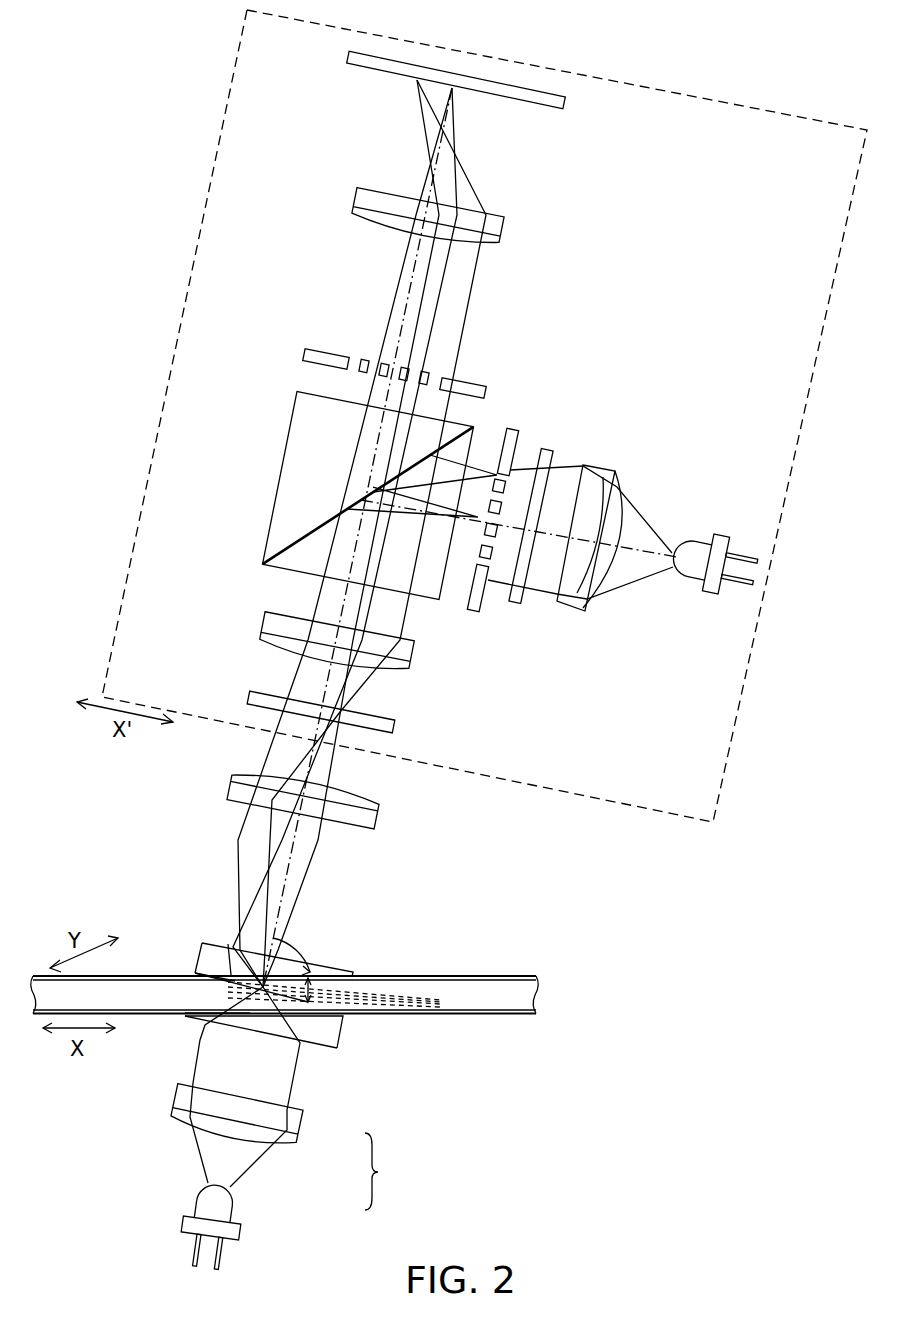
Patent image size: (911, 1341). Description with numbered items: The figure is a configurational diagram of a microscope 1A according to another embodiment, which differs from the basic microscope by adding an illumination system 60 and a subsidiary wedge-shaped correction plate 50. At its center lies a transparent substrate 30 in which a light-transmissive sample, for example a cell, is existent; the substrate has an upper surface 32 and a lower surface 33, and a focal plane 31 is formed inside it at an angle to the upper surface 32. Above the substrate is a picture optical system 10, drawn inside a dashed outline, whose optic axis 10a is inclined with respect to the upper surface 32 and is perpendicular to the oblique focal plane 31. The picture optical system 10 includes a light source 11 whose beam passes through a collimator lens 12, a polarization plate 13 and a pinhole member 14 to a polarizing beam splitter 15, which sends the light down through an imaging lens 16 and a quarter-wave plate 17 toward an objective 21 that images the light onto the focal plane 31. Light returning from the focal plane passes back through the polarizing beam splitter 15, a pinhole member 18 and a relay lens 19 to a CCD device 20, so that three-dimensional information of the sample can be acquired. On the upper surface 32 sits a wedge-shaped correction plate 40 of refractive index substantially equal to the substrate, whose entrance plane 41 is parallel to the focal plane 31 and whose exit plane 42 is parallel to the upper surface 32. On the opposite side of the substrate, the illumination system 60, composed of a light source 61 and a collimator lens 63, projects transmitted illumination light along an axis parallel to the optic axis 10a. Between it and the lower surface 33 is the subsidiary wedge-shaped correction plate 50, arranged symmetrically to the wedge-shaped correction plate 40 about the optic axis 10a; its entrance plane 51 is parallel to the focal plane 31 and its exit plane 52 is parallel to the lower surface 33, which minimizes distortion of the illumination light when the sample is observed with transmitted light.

The microscope 1A is at (696, 57).
The picture optical system 10 is at (773, 113).
The optic axis 10a is at (292, 870).
The light source 11 is at (700, 540).
The collimator lens 12 is at (600, 465).
The polarization plate 13 is at (548, 450).
The pinhole member 14 is at (512, 430).
The polarizing beam splitter 15 is at (286, 547).
The imaging lens 16 is at (415, 652).
The ¼λ plate 17 is at (397, 723).
The pinhole member 18 is at (302, 353).
The relay lens 19 is at (358, 200).
The CCD device 20 is at (347, 57).
The objective 21 is at (377, 817).
The transparent substrate 30 is at (315, 993).
The focal plane 31 is at (212, 1020).
The upper surface 32 is at (495, 975).
The lower surface 33 is at (490, 1013).
The wedge-shaped correction plate 40 is at (202, 960).
The entrance plane 41 is at (233, 943).
The exit plane 42 is at (212, 982).
The subsidiary wedge-shaped correction plate 50 is at (304, 1056).
The entrance plane 51 is at (317, 1050).
The exit plane 52 is at (337, 1010).
The illumination system 60 is at (288, 1178).
The light source 61 is at (235, 1213).
The collimator lens 63 is at (302, 1128).